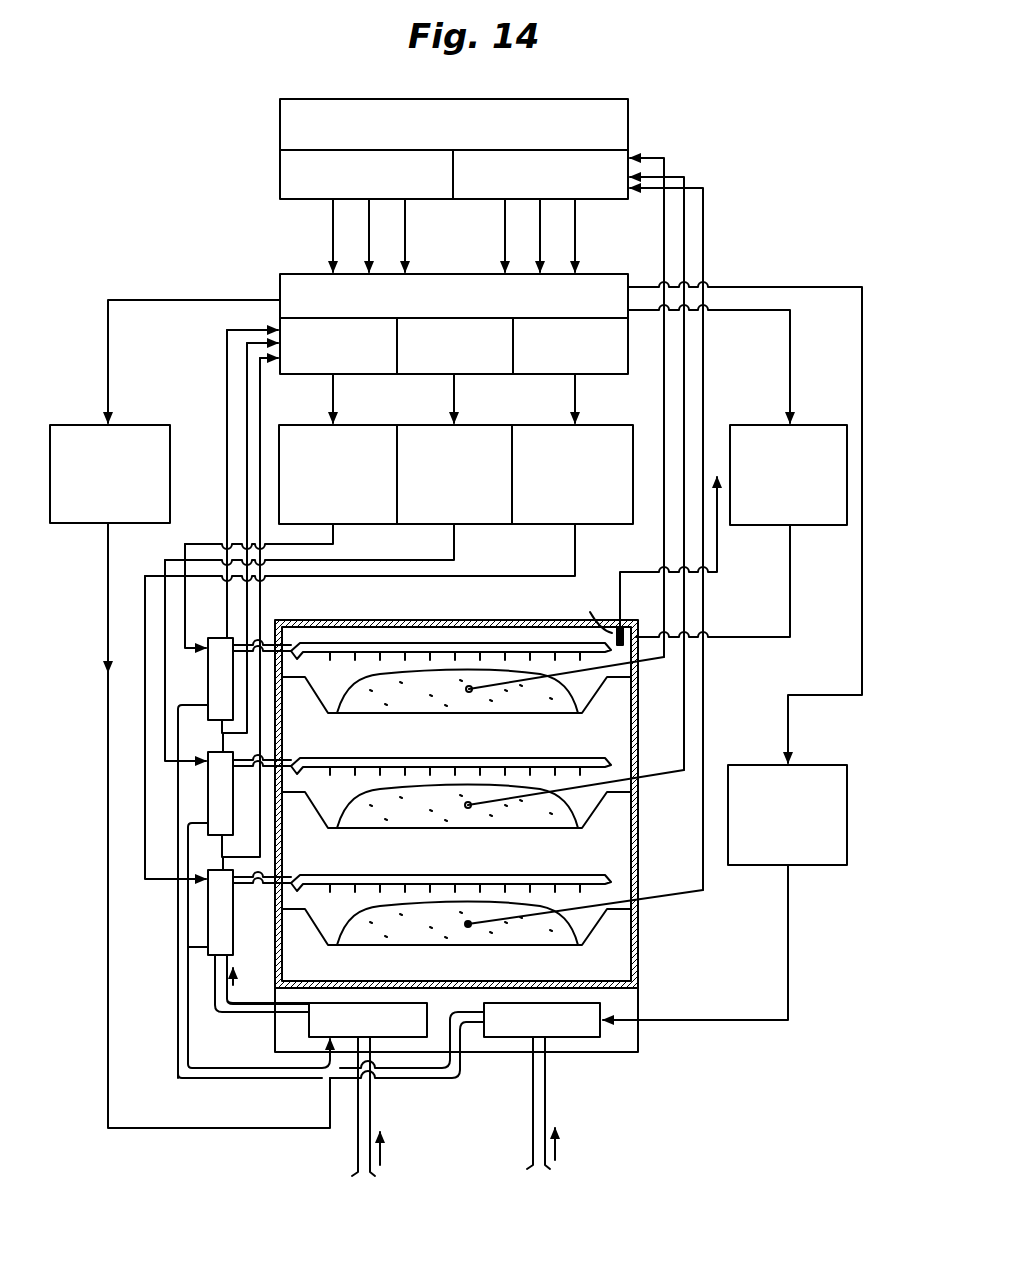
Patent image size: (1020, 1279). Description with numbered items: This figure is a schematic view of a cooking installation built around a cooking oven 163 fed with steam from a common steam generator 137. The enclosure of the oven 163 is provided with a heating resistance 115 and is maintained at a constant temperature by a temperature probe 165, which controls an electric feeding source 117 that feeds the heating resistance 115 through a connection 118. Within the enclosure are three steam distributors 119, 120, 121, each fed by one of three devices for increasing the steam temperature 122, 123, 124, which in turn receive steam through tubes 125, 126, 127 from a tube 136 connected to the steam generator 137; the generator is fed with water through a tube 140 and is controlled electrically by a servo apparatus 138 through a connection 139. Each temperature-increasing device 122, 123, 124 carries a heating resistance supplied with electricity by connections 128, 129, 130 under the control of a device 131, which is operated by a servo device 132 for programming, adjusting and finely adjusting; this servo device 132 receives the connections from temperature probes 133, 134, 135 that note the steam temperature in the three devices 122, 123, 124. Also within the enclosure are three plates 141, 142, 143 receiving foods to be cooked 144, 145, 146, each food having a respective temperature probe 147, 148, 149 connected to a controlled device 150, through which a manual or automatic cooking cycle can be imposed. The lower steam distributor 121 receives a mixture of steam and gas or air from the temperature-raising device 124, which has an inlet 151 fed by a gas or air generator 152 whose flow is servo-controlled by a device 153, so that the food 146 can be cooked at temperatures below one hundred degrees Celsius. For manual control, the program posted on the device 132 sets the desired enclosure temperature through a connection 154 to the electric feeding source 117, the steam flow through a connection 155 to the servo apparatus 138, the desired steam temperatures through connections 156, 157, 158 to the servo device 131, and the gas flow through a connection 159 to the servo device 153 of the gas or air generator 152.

The controlled device 150 is at (630, 133).
The connection 158 is at (336, 401).
The connection 157 is at (457, 401).
The connection 156 is at (578, 401).
The servo device 131 is at (303, 426).
The temperature probe 133 is at (226, 507).
The servo device for programming 132 is at (278, 322).
The connection 159 is at (198, 299).
The servo control device 153 is at (145, 424).
The connection 155 is at (758, 287).
The connection 154 is at (762, 312).
The electric feeding source 117 is at (817, 425).
The connection 118 is at (740, 637).
The heating resistance 115 is at (632, 626).
The temperature probe 165 is at (588, 609).
The temperature probe 147 is at (641, 667).
The temperature probe 148 is at (661, 777).
The temperature probe 149 is at (660, 890).
The servo apparatus 138 is at (832, 866).
The connection 139 is at (738, 1022).
The cooking oven 163 is at (642, 978).
The steam distributor 119 is at (476, 642).
The steam distributor 120 is at (520, 757).
The steam distributor 121 is at (520, 875).
The plate 141 is at (607, 703).
The plate 142 is at (607, 818).
The plate 143 is at (607, 935).
The food to be cooked 144 is at (364, 694).
The food to be cooked 145 is at (364, 812).
The food to be cooked 146 is at (364, 929).
The device for increasing the steam temperature 122 is at (221, 638).
The device for increasing the steam temperature 123 is at (208, 803).
The device for increasing the steam temperature 124 is at (208, 916).
The connection 128 is at (189, 612).
The connection 129 is at (195, 762).
The connection 130 is at (170, 880).
The temperature probe 134 is at (223, 746).
The temperature probe 135 is at (224, 864).
The tube 125 is at (197, 703).
The tube 126 is at (188, 823).
The tube 127 is at (200, 958).
The tube 136 is at (188, 1040).
The inlet 151 is at (240, 1018).
The gas or air generator 152 is at (410, 1046).
The steam generator 137 is at (500, 1046).
The tube 140 is at (548, 1106).